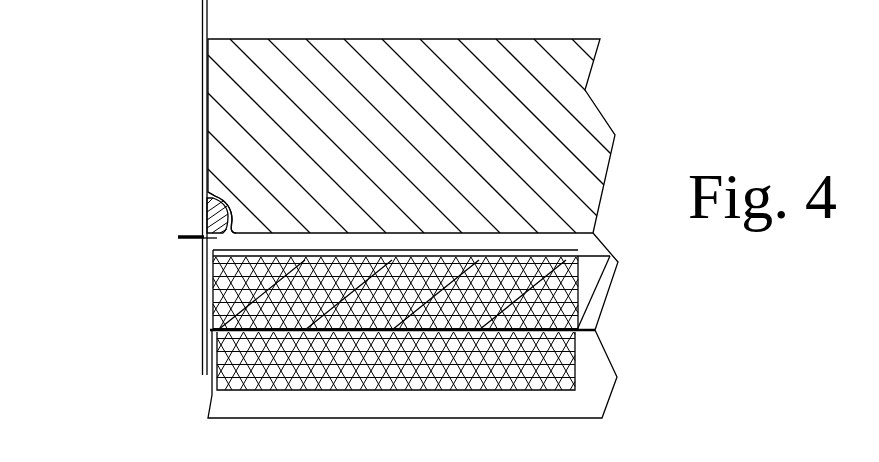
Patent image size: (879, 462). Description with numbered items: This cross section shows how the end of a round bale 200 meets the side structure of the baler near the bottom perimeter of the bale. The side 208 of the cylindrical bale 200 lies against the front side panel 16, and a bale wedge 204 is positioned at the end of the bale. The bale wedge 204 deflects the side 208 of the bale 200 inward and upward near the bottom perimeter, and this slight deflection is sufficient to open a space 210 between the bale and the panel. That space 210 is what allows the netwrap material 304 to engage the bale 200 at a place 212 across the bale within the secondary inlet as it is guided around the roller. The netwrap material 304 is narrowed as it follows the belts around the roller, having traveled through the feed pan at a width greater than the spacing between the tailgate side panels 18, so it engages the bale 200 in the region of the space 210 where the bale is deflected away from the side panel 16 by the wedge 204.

The front side panel 16 is at (204, 83).
The tailgate side panel 18 is at (203, 352).
The bale 200 is at (285, 135).
The bale wedge 204 is at (207, 213).
The sides of the bale 208 is at (205, 192).
The space 210 is at (213, 242).
The netwrap material 304 is at (207, 252).
The place across the bale 212 is at (212, 275).